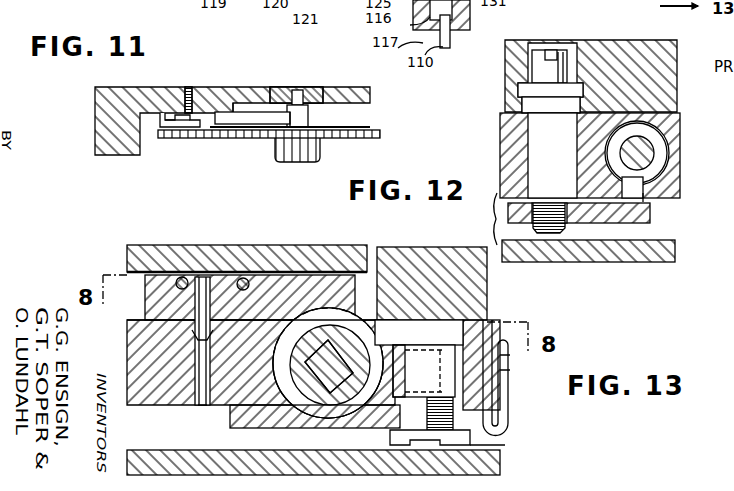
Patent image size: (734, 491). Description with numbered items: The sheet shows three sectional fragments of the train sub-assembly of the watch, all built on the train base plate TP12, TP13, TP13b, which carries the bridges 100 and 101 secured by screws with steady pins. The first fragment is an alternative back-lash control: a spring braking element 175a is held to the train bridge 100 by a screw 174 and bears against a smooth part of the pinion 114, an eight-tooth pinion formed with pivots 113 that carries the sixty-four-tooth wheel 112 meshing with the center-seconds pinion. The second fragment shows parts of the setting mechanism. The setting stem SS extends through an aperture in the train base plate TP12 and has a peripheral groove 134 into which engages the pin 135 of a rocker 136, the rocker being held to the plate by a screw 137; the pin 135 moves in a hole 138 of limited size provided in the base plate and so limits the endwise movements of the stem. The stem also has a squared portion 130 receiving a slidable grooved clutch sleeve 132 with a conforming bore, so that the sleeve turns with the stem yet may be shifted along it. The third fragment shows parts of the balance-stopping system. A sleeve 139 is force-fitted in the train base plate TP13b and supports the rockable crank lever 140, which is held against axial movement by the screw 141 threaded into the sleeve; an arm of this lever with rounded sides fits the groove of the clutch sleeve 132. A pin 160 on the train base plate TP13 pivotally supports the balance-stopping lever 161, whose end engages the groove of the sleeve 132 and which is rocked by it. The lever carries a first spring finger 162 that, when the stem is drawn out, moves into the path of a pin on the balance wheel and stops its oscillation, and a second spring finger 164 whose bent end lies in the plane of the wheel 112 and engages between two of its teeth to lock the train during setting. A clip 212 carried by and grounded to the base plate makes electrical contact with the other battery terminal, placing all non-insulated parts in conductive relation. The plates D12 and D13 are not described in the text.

In FIG. 11, the bridge 100 is at (370, 97).
In FIG. 12, the bridge 100 is at (606, 52).
In FIG. 13, the bridge 100 is at (137, 252).
In FIG. 11, the pivots 113 is at (297, 90).
In FIG. 11, the spring braking element 175a is at (250, 113).
In FIG. 11, the screw 174 is at (178, 127).
In FIG. 11, the wheel 112 is at (381, 135).
In FIG. 11, the pinion 114 is at (307, 145).
In FIG. 12, the screw 137 is at (540, 172).
In FIG. 12, the train base plate TP12 is at (505, 148).
In FIG. 12, the peripheral groove 134 is at (648, 140).
In FIG. 12, the setting stem SS is at (640, 151).
In FIG. 12, the pin 135 is at (643, 188).
In FIG. 12, the hole 138 is at (650, 204).
In FIG. 12, the rocker 136 is at (648, 222).
In FIG. 12, the die plate D12 is at (587, 262).
In FIG. 13, the bridge 101 is at (408, 262).
In FIG. 13, the balance-stopping lever 161 is at (297, 285).
In FIG. 13, the train base plate TP13 is at (145, 345).
In FIG. 13, the pin 160 is at (200, 298).
In FIG. 13, the first spring finger 162 is at (183, 276).
In FIG. 13, the second spring finger 164 is at (244, 278).
In FIG. 13, the squared portion 130 is at (340, 395).
In FIG. 13, the clutch sleeve 132 is at (290, 405).
In FIG. 13, the crank lever 140 is at (241, 422).
In FIG. 13, the die plate D13 is at (165, 450).
In FIG. 13, the sleeve 139 is at (503, 390).
In FIG. 13, the train base plate TP13b is at (507, 370).
In FIG. 13, the clip 212 is at (515, 410).
In FIG. 13, the screw 141 is at (503, 446).